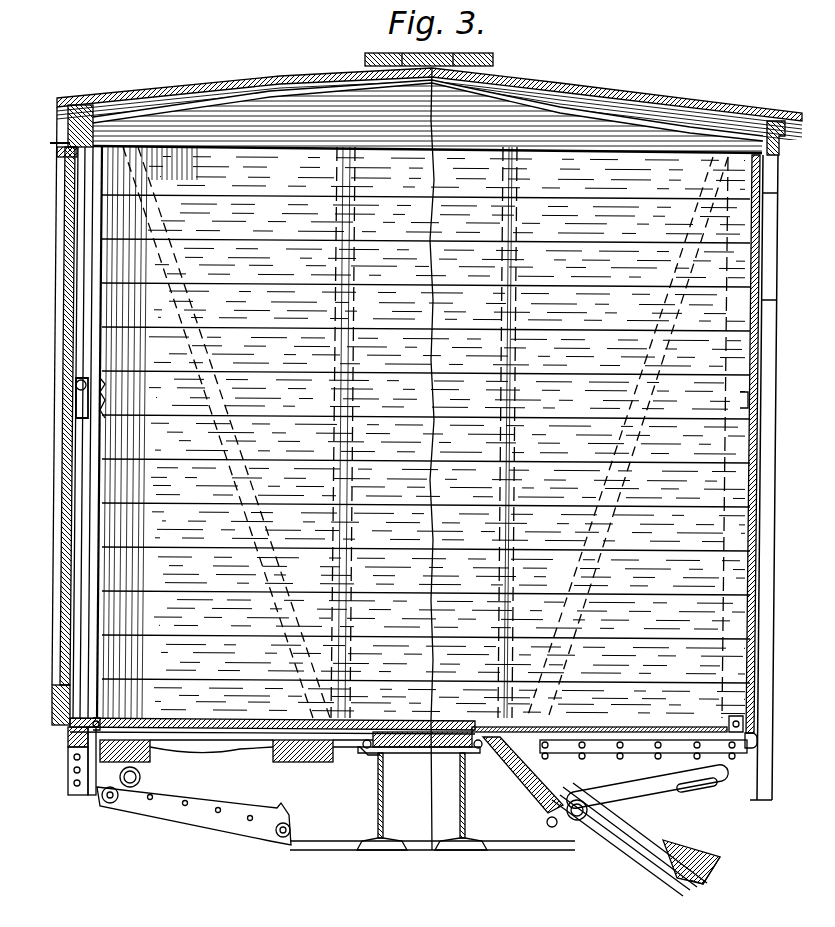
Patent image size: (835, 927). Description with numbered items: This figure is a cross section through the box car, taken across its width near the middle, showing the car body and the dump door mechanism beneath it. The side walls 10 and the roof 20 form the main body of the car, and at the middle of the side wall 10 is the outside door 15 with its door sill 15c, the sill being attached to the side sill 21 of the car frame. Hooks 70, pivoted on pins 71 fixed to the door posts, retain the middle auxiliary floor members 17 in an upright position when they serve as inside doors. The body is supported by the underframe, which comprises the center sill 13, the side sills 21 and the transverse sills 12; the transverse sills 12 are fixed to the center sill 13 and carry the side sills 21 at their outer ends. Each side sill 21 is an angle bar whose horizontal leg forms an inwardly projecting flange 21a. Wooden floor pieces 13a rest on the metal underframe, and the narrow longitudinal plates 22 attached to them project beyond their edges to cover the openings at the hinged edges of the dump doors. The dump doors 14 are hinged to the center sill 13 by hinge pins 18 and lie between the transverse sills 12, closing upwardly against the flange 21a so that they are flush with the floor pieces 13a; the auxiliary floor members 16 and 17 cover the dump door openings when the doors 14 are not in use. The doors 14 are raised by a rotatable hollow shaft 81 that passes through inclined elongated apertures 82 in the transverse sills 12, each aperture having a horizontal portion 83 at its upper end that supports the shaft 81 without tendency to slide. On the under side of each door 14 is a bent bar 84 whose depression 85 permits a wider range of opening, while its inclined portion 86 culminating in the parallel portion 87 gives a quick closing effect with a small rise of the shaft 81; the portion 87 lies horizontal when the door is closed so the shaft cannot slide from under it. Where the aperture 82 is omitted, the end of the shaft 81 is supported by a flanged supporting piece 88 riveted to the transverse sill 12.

The side wall 10 is at (760, 610).
The transverse sill 12 is at (233, 788).
The center sill 13 is at (441, 738).
The wooden floor piece 13a is at (383, 783).
The dump door 14 is at (165, 720).
The outside door 15 is at (68, 565).
The door sill 15c is at (68, 750).
The auxiliary floor member 16 is at (598, 728).
The auxiliary floor member 17 is at (198, 722).
The hinge pin 18 is at (372, 718).
The roof 20 is at (222, 76).
The side sill 21 is at (66, 736).
The inwardly projecting flange 21a is at (95, 722).
The longitudinally disposed plate 22 is at (428, 712).
The hook 70 is at (78, 419).
The pin 71 is at (76, 383).
The shaft 81 is at (115, 783).
The inclined elongated aperture 82 is at (647, 786).
The horizontal portion 83 is at (697, 781).
The bar 84 is at (637, 847).
The depression 85 is at (580, 822).
The inclined portion 86 is at (650, 860).
The parallel portion 87 is at (680, 880).
The flanged supporting piece 88 is at (274, 834).